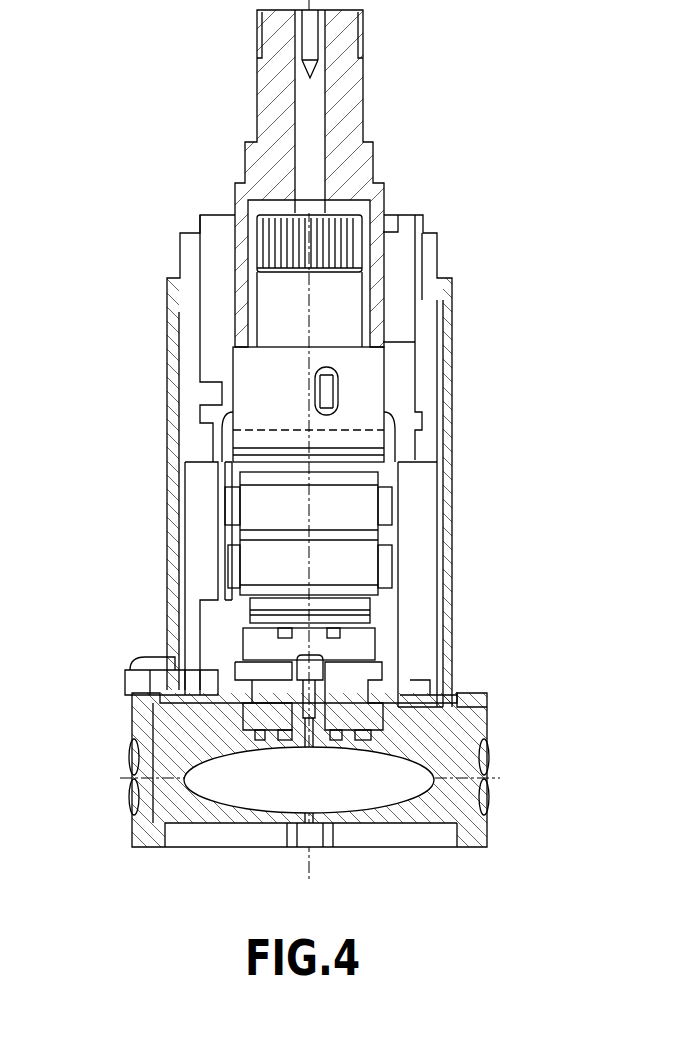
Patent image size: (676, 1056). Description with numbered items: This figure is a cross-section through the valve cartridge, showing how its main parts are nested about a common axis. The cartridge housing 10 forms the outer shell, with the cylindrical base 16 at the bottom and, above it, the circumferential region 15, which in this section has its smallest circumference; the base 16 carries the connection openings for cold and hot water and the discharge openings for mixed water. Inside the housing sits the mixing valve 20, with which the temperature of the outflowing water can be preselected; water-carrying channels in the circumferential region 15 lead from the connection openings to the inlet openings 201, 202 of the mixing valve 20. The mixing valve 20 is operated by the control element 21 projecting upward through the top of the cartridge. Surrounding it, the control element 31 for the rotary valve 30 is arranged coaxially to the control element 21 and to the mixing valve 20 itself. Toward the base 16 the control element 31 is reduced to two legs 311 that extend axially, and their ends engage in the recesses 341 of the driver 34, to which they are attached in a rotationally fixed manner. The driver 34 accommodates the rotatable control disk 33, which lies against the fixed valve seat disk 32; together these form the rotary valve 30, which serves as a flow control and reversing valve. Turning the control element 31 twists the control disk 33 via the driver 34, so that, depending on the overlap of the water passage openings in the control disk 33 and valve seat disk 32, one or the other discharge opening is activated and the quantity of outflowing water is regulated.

The cartridge housing 10 is at (407, 487).
The circumferential region 15 is at (218, 540).
The base 16 is at (158, 748).
The mixing valve 20 is at (345, 505).
The inlet opening 201 is at (235, 568).
The inlet opening 202 is at (380, 518).
The control element 21 is at (363, 80).
The rotary valve 30 is at (347, 673).
The control element 31 is at (452, 365).
The legs 311 is at (452, 600).
The valve seat disk 32 is at (215, 730).
The control disk 33 is at (265, 690).
The driver 34 is at (410, 695).
The recesses 341 is at (455, 705).